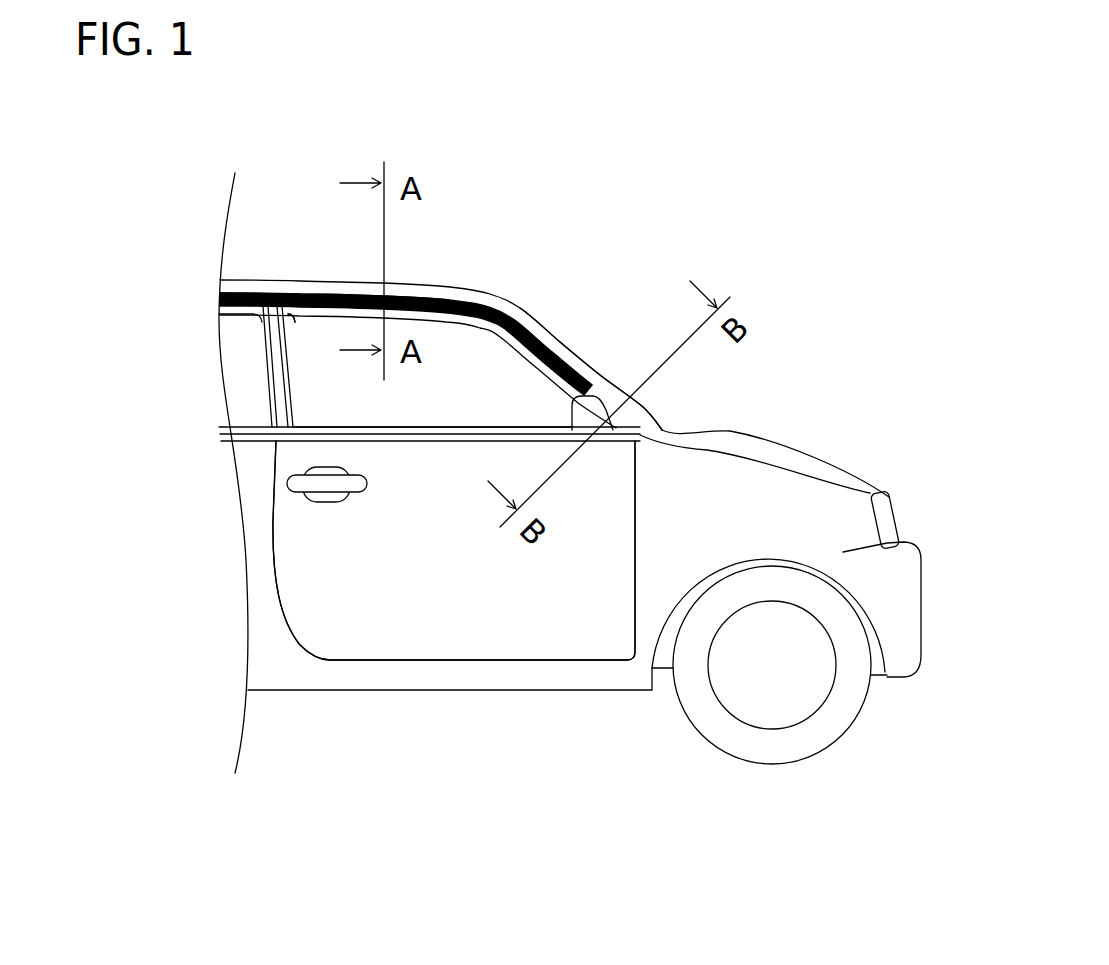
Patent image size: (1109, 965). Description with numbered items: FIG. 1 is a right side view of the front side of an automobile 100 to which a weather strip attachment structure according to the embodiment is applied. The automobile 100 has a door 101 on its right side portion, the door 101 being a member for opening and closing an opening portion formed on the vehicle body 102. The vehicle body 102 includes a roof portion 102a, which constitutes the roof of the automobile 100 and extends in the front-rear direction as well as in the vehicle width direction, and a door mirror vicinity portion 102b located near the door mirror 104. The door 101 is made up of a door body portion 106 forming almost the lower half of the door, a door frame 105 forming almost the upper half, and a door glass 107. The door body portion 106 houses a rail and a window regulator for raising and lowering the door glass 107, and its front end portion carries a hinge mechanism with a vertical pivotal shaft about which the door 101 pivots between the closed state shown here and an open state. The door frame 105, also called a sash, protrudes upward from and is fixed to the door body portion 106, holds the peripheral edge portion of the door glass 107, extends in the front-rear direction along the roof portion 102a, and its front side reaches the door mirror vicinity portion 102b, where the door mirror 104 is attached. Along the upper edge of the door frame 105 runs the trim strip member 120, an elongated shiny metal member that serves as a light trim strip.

The automobile 100 is at (550, 320).
The door 101 is at (272, 535).
The vehicle body 102 is at (452, 283).
The roof portion 102a is at (303, 280).
The door mirror vicinity portion 102b is at (648, 414).
The door mirror 104 is at (597, 407).
The door frame 105 is at (335, 307).
The door body portion 106 is at (437, 630).
The door glass 107 is at (312, 385).
The trim strip member 120 is at (493, 303).